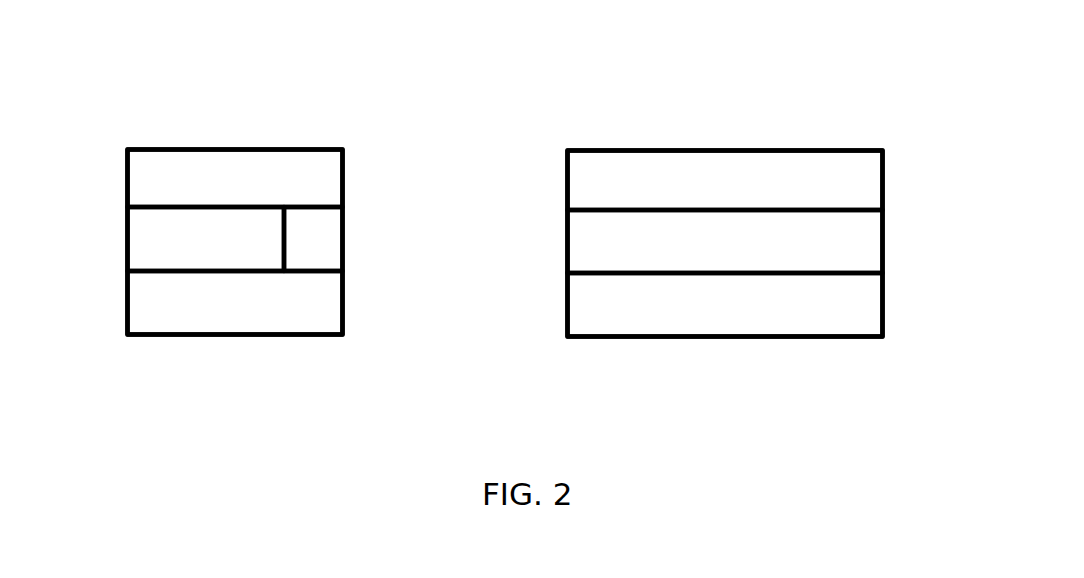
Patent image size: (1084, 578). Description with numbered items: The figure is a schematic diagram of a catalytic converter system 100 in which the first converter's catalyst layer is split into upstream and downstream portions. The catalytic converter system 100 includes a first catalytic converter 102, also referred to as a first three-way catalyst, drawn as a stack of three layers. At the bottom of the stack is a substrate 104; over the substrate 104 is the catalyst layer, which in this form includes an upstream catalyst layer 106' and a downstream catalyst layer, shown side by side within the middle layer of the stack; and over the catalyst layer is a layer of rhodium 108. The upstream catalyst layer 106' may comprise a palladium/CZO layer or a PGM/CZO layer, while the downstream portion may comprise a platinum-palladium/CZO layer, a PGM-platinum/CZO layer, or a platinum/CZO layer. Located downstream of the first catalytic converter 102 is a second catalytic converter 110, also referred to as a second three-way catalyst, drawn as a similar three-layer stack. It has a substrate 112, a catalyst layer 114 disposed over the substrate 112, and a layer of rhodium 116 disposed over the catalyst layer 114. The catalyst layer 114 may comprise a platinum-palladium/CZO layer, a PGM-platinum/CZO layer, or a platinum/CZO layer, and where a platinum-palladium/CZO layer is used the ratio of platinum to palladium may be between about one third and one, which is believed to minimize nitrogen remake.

The catalytic converter system 100 is at (607, 78).
The first catalytic converter 102 is at (278, 105).
The substrate 104 is at (445, 293).
The upstream catalyst layer 106' is at (163, 239).
The layer of rhodium 108 is at (445, 170).
The second catalytic converter 110 is at (713, 104).
The substrate 112 is at (885, 315).
The catalyst layer 114 is at (885, 248).
The layer of rhodium 116 is at (885, 182).